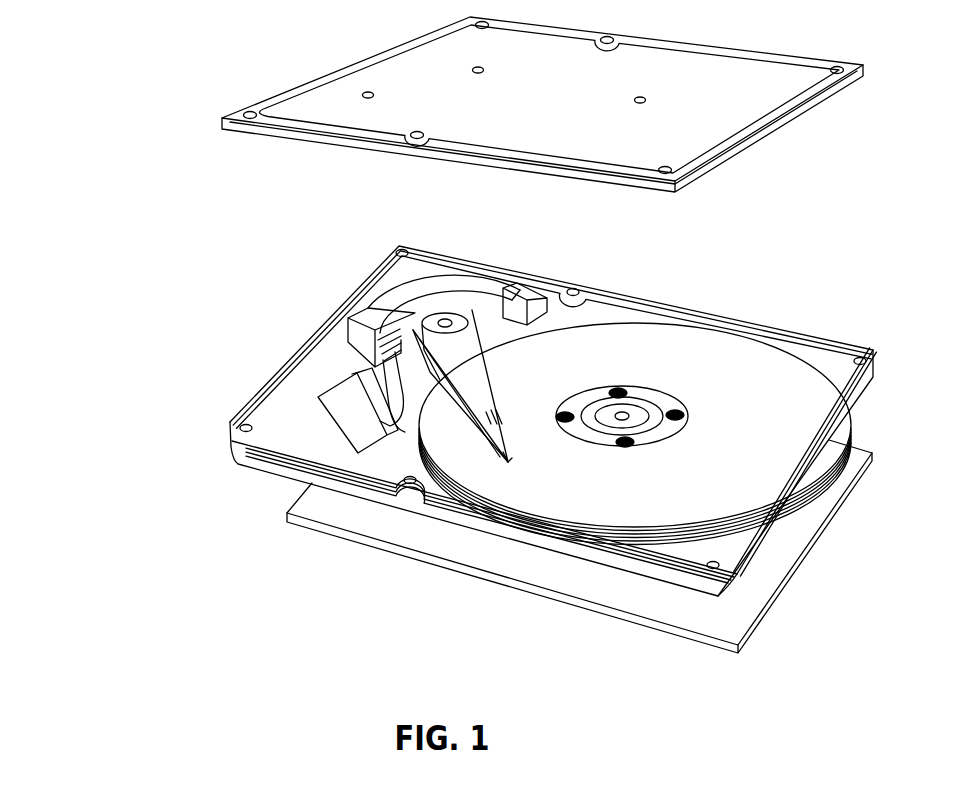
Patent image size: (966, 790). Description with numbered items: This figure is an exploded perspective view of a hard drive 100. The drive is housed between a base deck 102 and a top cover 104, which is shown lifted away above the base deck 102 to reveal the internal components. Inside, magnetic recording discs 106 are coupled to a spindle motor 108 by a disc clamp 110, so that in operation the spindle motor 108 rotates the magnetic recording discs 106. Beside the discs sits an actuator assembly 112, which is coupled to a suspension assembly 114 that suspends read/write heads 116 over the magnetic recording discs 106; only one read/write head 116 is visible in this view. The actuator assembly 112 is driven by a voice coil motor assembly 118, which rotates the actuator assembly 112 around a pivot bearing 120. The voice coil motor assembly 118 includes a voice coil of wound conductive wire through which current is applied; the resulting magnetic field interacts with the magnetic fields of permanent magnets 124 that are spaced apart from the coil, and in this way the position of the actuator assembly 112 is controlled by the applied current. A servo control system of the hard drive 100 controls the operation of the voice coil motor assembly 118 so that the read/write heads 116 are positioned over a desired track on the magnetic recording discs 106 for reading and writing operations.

The hard drive 100 is at (146, 66).
The base deck 102 is at (856, 396).
The top cover 104 is at (678, 93).
The magnetic recording discs 106 is at (728, 435).
The spindle motor 108 is at (630, 410).
The disc clamp 110 is at (665, 430).
The actuator assembly 112 is at (486, 372).
The suspension assembly 114 is at (500, 437).
The read/write heads 116 is at (510, 462).
The voice coil motor assembly 118 is at (384, 281).
The pivot bearing 120 is at (457, 322).
The permanent magnets 124 is at (387, 337).